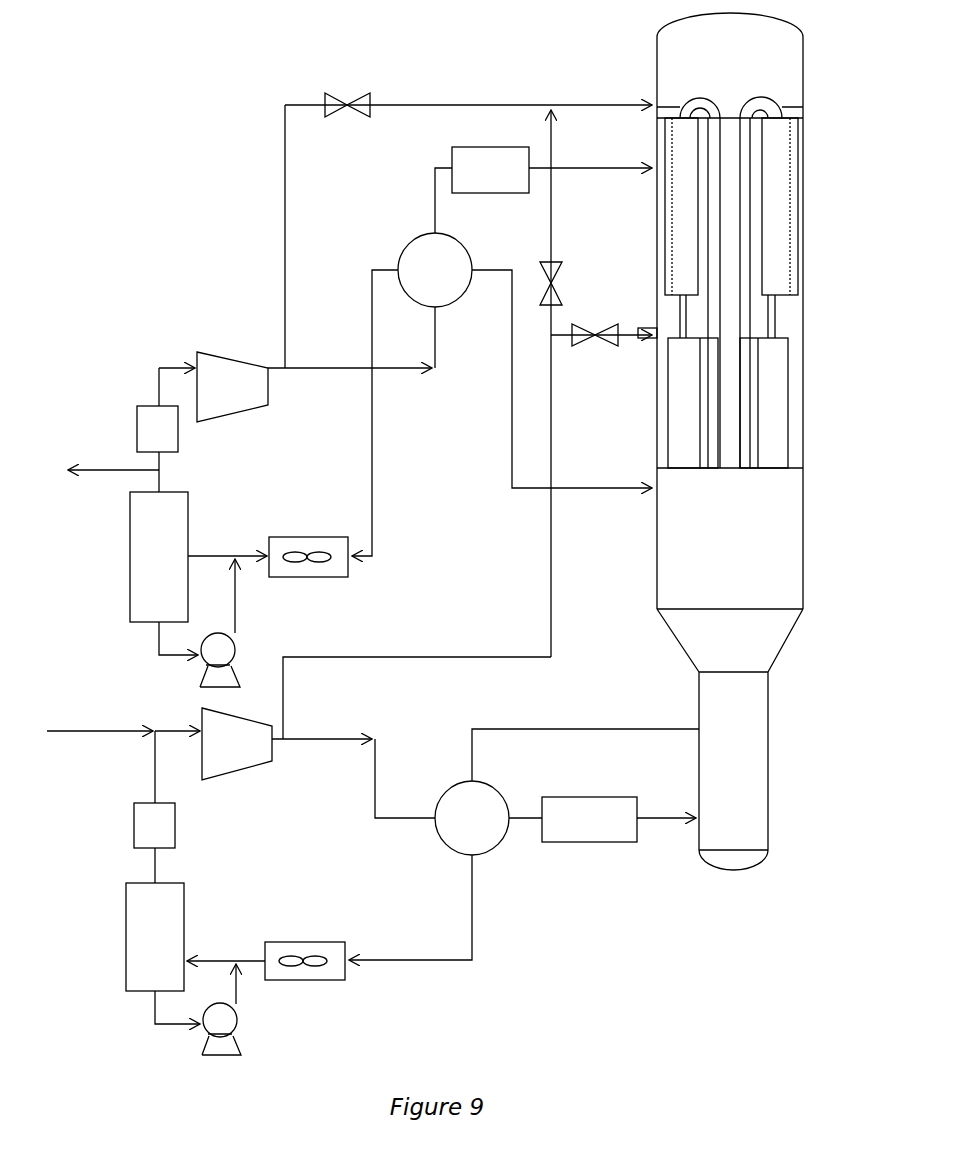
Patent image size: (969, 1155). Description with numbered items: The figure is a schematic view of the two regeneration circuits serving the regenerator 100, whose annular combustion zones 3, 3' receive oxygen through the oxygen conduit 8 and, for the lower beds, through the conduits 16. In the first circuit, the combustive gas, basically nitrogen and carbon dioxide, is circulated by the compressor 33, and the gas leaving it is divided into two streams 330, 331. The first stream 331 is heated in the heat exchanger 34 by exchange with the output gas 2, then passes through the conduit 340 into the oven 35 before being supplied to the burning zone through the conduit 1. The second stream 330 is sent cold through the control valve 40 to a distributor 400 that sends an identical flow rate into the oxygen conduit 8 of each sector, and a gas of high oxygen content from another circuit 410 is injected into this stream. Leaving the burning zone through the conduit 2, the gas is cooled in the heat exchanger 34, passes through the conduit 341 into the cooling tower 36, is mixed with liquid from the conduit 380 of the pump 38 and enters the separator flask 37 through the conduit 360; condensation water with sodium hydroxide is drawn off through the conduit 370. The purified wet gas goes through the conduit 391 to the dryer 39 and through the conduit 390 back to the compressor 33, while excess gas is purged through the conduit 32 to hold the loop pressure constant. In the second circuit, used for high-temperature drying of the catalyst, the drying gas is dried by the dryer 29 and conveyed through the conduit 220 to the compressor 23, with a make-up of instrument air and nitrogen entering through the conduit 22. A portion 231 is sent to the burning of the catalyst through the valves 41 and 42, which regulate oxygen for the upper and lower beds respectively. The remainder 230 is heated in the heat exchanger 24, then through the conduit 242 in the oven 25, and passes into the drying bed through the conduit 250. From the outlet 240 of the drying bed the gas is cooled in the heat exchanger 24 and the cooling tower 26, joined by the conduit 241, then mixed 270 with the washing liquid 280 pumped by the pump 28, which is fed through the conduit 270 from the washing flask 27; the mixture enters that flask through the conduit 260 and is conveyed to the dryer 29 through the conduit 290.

The regenerator 100 is at (648, 51).
The oxygen conduit 8 is at (680, 103).
The annular combustion zone 3 is at (755, 293).
The annular combustion zone 3' is at (761, 403).
The conduit 16 is at (651, 325).
The conduit 1 is at (639, 174).
The output gas conduit 2 is at (653, 490).
The distributor 400 is at (443, 100).
The control valve 40 is at (347, 94).
The second stream 330 is at (281, 197).
The first stream 331 is at (318, 374).
The heat exchanger 34 is at (441, 294).
The conduit 340 is at (434, 194).
The oven 35 is at (476, 157).
The circuit 410 is at (556, 229).
The valve 41 is at (546, 278).
The valve 42 is at (597, 340).
The conduit 341 is at (377, 500).
The compressor 33 is at (233, 368).
The conduit 390 is at (156, 364).
The dryer 39 is at (135, 432).
The conduit 391 is at (164, 484).
The purge conduit 32 is at (99, 479).
The separator flask 37 is at (143, 557).
The conduit 370 is at (156, 645).
The pump 38 is at (225, 652).
The conduit 380 is at (240, 598).
The conduit 360 is at (213, 550).
The cooling tower 36 is at (298, 535).
The portion of combustive gas 231 is at (402, 654).
The make-up conduit 22 is at (85, 722).
The conduit 220 is at (151, 766).
The compressor 23 is at (260, 750).
The remainder of the gas 230 is at (327, 736).
The dryer 29 is at (132, 826).
The conduit 290 is at (162, 867).
The washing flask 27 is at (124, 935).
The conduit 270 is at (151, 1015).
The pump 28 is at (225, 1025).
The washing liquid conduit 280 is at (242, 998).
The conduit 260 is at (211, 957).
The cooling tower 26 is at (316, 942).
The conduit 241 is at (438, 962).
The heat exchanger 24 is at (456, 828).
The outlet 240 is at (569, 726).
The conduit 242 is at (522, 824).
The oven 25 is at (573, 805).
The conduit 250 is at (655, 826).